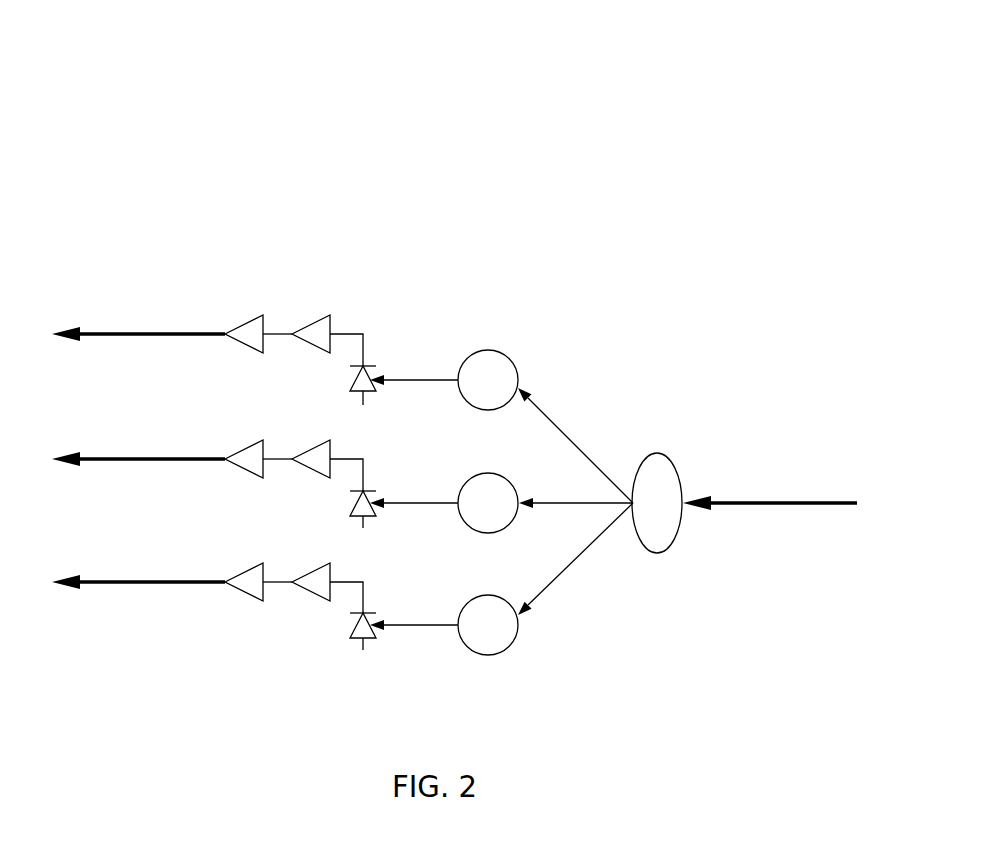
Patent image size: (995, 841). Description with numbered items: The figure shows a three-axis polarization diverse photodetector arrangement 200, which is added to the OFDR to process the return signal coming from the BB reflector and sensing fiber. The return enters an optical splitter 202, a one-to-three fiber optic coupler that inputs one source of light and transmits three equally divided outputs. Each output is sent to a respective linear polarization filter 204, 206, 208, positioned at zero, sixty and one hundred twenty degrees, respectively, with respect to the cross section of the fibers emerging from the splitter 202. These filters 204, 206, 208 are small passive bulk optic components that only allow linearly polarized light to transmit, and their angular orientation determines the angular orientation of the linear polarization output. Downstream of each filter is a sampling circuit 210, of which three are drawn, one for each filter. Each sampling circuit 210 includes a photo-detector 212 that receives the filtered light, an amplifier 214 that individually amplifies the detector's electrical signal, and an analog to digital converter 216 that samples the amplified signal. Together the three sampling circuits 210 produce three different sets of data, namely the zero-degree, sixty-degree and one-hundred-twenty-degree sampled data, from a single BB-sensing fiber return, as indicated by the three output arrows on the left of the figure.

The 3-axis polarization diverse photodetector arrangement 200 is at (184, 103).
The optical splitter 202 is at (684, 520).
The linear polarization filter 204 is at (518, 362).
The linear polarization filter 206 is at (517, 491).
The linear polarization filter 208 is at (523, 638).
The sampling circuit 210 is at (355, 461).
The photo-detector 212 is at (313, 385).
The amplifier 214 is at (343, 312).
The analog to digital A/D converter 216 is at (276, 312).